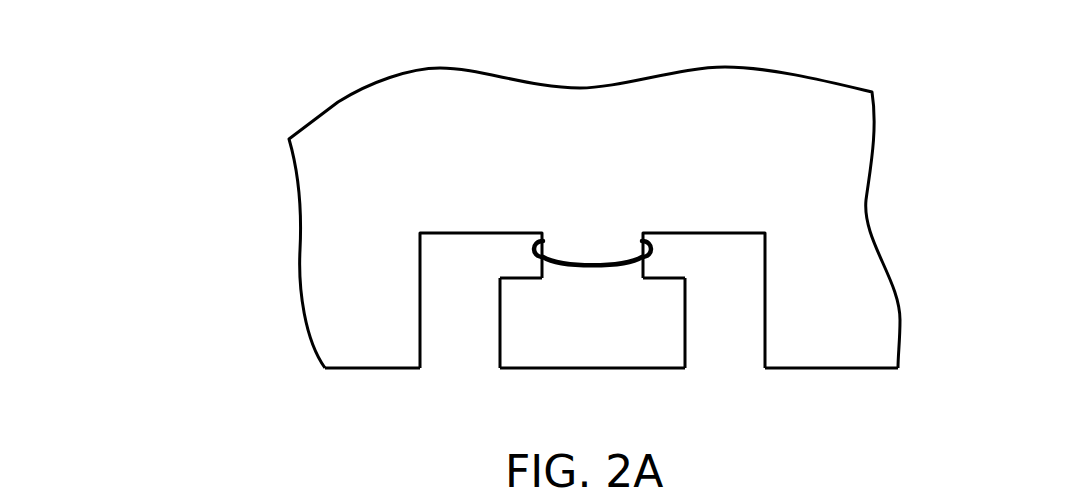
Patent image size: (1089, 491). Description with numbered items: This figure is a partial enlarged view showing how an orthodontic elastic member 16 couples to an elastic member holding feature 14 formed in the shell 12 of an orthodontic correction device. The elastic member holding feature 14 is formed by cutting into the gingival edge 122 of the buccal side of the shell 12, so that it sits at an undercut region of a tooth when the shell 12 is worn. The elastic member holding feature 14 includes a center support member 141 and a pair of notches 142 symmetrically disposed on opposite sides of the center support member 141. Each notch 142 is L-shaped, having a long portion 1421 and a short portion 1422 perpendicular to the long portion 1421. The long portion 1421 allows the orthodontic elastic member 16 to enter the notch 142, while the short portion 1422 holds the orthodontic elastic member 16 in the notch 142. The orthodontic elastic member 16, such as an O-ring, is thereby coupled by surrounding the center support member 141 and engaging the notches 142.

The shell 12 is at (340, 100).
The gingival edge 122 is at (833, 370).
The elastic member holding feature 14 is at (1015, 45).
The center support member 141 is at (593, 333).
The notch 142 is at (603, 207).
The long portion 1421 is at (462, 317).
The short portion 1422 is at (510, 255).
The orthodontic elastic member 16 is at (652, 250).